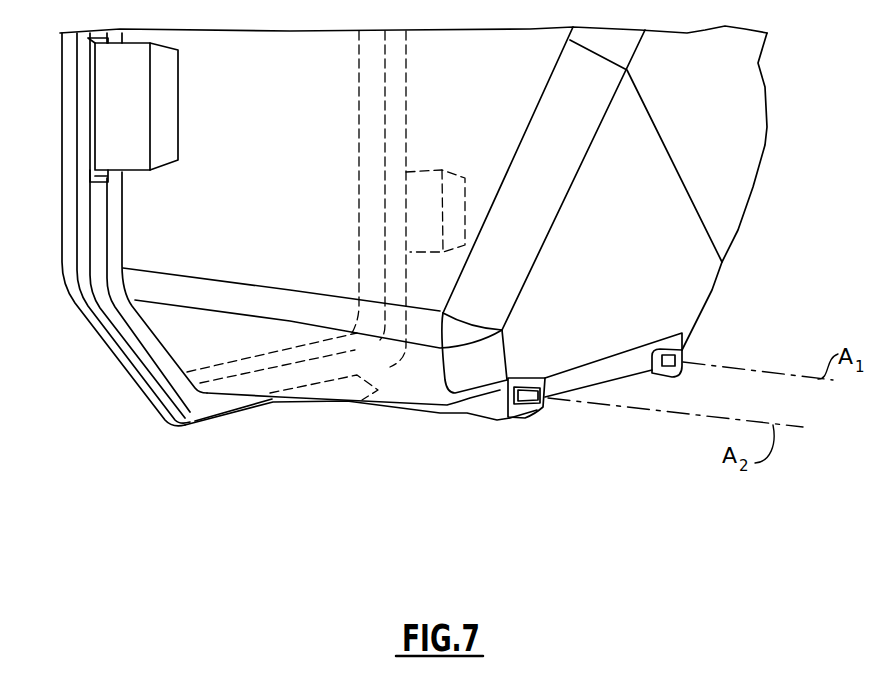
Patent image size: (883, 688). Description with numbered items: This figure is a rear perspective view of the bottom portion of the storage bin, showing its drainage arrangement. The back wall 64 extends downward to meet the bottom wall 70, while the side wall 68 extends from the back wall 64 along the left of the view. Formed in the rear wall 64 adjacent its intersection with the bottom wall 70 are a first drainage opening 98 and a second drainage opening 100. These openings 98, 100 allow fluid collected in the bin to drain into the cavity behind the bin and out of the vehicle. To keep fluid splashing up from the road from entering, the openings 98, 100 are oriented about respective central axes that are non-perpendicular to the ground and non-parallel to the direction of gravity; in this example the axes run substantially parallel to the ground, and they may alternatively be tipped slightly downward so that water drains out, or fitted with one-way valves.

The back wall 64 is at (720, 110).
The second side wall 68 is at (203, 192).
The bottom wall 70 is at (369, 410).
The first drainage opening 98 is at (696, 347).
The second drainage opening 100 is at (538, 436).